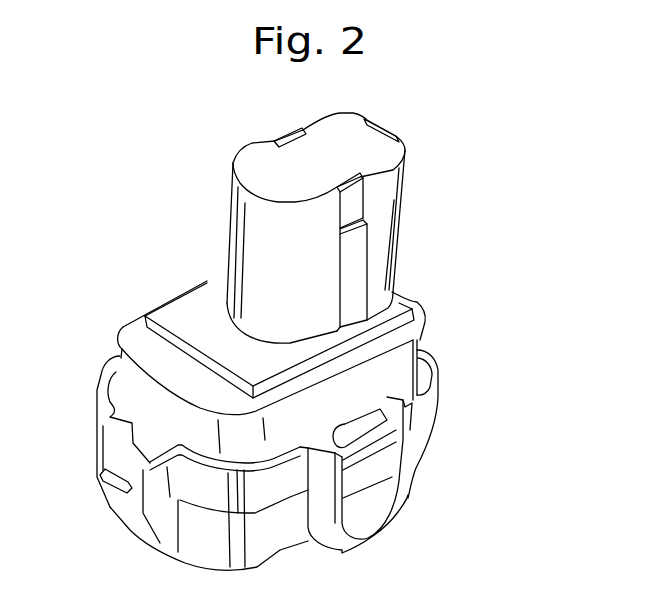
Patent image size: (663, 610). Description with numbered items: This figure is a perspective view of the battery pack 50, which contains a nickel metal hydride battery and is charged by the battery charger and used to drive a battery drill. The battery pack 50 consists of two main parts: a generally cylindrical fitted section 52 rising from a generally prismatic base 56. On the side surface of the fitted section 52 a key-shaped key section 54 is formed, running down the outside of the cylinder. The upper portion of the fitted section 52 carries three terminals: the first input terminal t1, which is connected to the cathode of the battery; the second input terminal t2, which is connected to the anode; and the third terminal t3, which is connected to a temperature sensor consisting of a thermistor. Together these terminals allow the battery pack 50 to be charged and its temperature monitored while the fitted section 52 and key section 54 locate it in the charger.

The battery pack 50 is at (170, 131).
The fitted section 52 is at (402, 241).
The key section 54 is at (363, 284).
The base 56 is at (432, 404).
The first input terminal t1 is at (284, 140).
The second input terminal t2 is at (358, 190).
The third terminal t3 is at (384, 127).